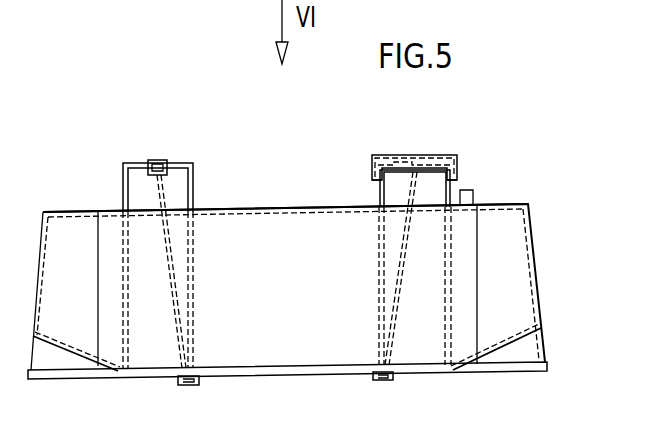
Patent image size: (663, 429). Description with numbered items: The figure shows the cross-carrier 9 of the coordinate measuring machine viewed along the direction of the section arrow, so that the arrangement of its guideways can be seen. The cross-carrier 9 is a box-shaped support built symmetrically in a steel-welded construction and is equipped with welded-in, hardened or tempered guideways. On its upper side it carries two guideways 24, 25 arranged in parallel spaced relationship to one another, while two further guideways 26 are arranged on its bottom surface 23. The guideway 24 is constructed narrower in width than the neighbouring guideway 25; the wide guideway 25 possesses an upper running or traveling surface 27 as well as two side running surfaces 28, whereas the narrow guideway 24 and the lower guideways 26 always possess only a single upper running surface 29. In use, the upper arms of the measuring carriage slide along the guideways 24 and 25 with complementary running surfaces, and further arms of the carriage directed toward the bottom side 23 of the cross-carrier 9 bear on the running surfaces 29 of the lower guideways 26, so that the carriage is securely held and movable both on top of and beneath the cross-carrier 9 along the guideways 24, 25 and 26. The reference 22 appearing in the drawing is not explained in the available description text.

The cross-carrier 9 is at (521, 288).
The top wall 22 is at (283, 208).
The bottom surface 23 is at (305, 378).
The guideway 24 is at (163, 162).
The guideway 25 is at (397, 153).
The guideway 26 is at (182, 386).
The upper running surface 27 is at (420, 153).
The side running surface 28 is at (372, 172).
The upper running surface 29 is at (153, 156).